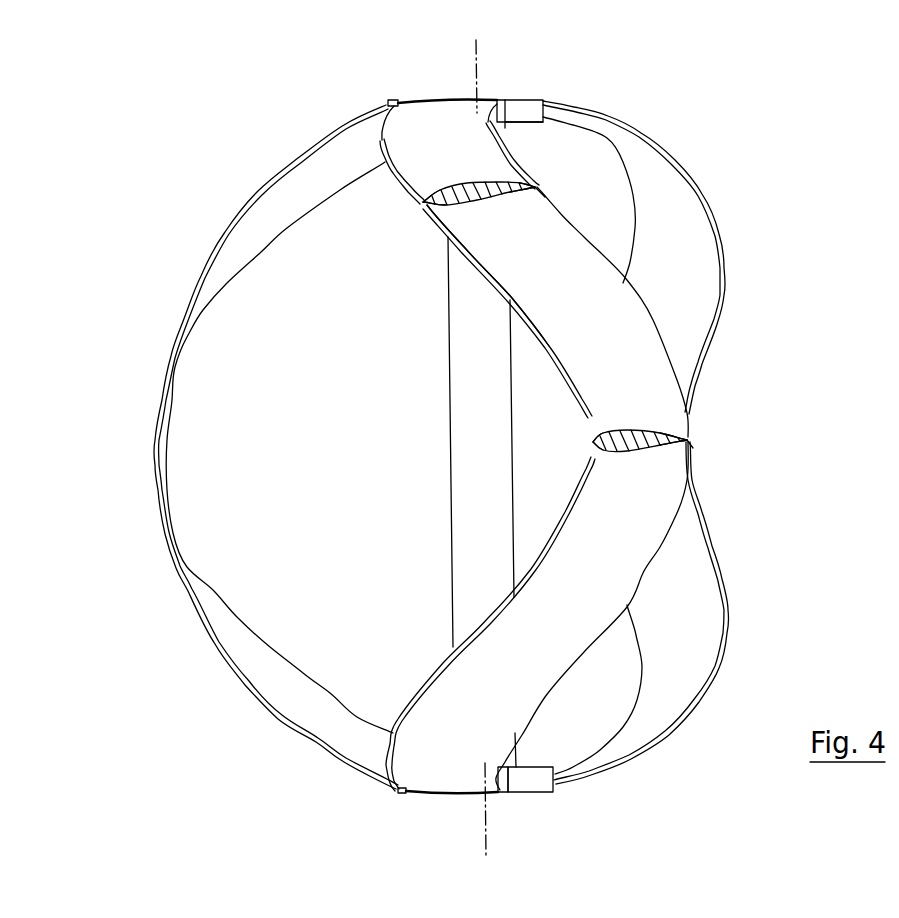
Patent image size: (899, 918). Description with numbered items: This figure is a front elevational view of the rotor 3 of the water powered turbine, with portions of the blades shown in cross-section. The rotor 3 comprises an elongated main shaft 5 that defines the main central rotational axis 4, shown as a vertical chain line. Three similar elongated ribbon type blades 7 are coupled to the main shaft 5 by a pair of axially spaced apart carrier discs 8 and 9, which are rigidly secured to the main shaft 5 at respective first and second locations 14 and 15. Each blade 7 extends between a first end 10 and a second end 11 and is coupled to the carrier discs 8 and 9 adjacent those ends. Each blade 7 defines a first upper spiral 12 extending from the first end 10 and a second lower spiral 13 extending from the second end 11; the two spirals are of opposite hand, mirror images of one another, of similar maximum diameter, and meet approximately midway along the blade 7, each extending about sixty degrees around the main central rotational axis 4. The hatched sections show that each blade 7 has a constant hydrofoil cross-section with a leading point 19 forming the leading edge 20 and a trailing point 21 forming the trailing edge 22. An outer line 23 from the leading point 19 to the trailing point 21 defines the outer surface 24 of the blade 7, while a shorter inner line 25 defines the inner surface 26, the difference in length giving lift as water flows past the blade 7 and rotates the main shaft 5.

The rotor 3 is at (405, 446).
The main central rotational axis 4 is at (476, 47).
The main shaft 5 is at (465, 435).
The blade 7 is at (681, 198).
The carrier disc 8 is at (527, 114).
The carrier disc 9 is at (527, 782).
The first end 10 is at (386, 106).
The second end 11 is at (572, 787).
The first upper spiral 12 is at (653, 140).
The second lower spiral 13 is at (710, 607).
The first location 14 is at (520, 119).
The second location 15 is at (517, 767).
The leading point 19 is at (421, 203).
The leading edge 20 is at (423, 205).
The trailing point 21 is at (538, 186).
The trailing edge 22 is at (542, 190).
The outer line 23 is at (469, 182).
The outer surface 24 is at (557, 298).
The inner line 25 is at (473, 203).
The inner surface 26 is at (695, 295).